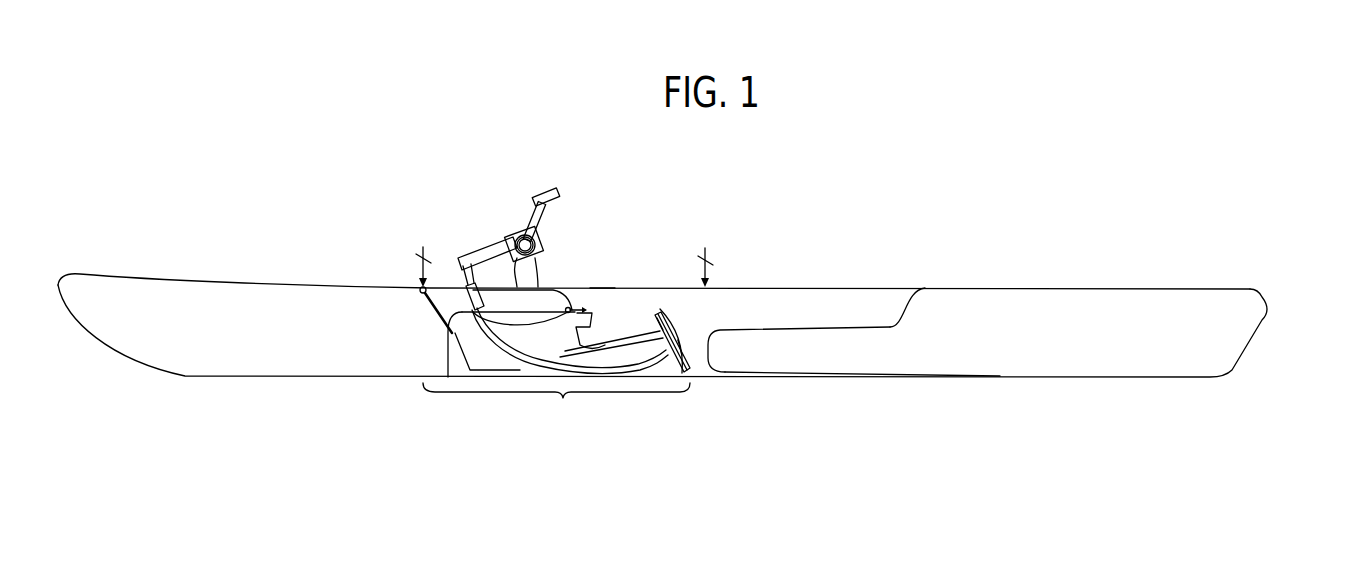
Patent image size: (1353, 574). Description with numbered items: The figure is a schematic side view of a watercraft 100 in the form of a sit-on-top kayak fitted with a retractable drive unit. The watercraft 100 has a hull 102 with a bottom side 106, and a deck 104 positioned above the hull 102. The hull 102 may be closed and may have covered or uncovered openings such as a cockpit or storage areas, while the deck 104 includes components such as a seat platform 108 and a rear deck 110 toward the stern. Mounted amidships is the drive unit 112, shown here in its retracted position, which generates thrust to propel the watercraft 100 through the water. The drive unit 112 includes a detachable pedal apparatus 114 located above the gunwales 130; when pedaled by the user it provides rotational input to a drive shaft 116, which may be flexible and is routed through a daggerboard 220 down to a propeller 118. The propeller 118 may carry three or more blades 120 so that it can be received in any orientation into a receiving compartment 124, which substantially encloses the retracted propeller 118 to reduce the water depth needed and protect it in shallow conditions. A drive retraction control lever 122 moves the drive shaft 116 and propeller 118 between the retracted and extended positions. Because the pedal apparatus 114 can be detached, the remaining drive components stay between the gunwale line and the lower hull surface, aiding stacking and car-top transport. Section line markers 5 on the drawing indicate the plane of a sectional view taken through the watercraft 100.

The watercraft 100 is at (699, 285).
The hull 102 is at (1037, 391).
The deck 104 is at (1036, 272).
The bottom side 106 is at (958, 377).
The seat platform 108 is at (823, 328).
The rear deck 110 is at (950, 287).
The drive unit 112 is at (570, 295).
The detachable pedal apparatus 114 is at (563, 186).
The drive shaft 116 is at (527, 358).
The propeller 118 is at (698, 357).
The blades 120 is at (660, 314).
The drive retraction control lever 122 is at (580, 307).
The receiving compartment 124 is at (697, 324).
The gunwales 130 is at (602, 287).
The daggerboard 220 is at (482, 343).
The section line 5 is at (558, 266).